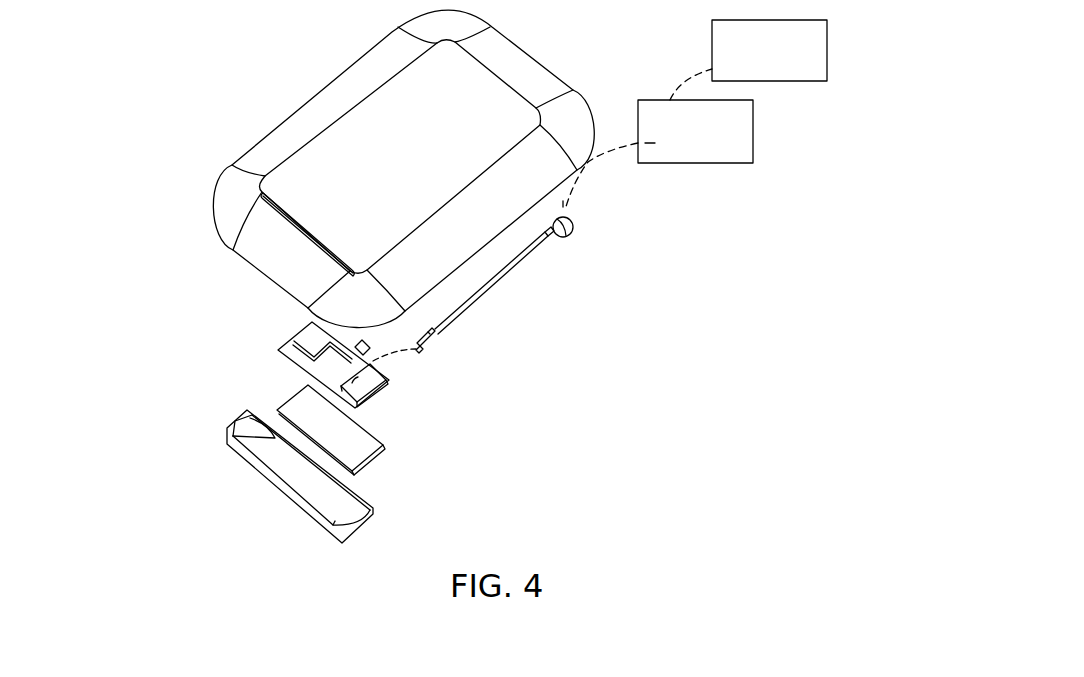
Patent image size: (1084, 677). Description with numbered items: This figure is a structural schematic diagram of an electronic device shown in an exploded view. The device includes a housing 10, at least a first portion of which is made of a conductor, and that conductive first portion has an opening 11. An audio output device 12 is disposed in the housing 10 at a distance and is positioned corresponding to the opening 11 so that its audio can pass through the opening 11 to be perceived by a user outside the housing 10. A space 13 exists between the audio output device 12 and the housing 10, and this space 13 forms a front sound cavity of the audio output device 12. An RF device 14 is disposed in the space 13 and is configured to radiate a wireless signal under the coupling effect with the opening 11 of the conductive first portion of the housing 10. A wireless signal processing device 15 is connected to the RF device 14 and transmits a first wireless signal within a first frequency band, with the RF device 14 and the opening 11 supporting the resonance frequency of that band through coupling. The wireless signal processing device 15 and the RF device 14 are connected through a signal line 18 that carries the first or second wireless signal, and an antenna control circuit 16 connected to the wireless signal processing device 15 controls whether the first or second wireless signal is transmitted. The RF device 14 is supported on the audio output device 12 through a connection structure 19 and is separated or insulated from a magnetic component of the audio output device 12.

The housing 10 is at (428, 259).
The opening 11 is at (310, 219).
The audio output device 12 is at (338, 497).
The space 13 is at (230, 322).
The RF device 14 is at (368, 386).
The wireless signal processing device 15 is at (719, 141).
The antenna control circuit 16 is at (790, 48).
The signal line 18 is at (437, 332).
The connection structure 19 is at (348, 453).